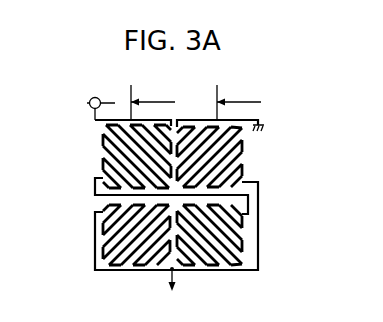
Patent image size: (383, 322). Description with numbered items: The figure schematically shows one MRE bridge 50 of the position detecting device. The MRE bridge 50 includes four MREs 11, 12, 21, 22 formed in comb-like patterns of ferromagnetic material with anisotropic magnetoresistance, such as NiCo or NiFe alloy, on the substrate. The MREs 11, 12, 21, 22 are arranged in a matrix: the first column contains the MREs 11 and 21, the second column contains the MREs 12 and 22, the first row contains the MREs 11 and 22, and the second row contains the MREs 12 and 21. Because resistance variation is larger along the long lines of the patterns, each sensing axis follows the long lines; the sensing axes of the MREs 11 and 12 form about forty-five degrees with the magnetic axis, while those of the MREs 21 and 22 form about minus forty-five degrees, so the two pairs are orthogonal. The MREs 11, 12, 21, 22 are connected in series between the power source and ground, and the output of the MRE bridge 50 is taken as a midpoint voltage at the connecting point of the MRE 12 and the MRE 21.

The MRE bridge 50 is at (282, 112).
The MRE 11 is at (105, 168).
The MRE 22 is at (243, 167).
The MRE 21 is at (103, 243).
The MRE 12 is at (243, 242).